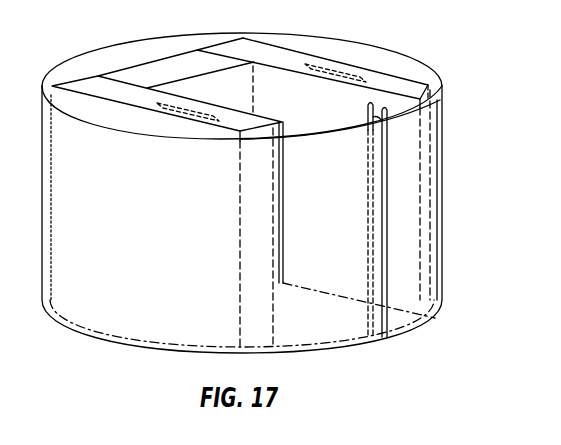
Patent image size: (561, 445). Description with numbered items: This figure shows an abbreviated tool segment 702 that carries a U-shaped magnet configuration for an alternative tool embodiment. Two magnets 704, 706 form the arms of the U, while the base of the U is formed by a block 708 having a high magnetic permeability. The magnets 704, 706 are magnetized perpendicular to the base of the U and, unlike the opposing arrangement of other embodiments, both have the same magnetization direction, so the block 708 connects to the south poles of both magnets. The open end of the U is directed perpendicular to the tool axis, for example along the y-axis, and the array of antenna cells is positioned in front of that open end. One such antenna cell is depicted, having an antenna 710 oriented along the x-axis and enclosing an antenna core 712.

The abbreviated tool segment 702 is at (113, 342).
The magnet 704 is at (347, 62).
The magnet 706 is at (75, 78).
The block 708 is at (146, 60).
The antenna 710 is at (372, 313).
The antenna core 712 is at (437, 162).